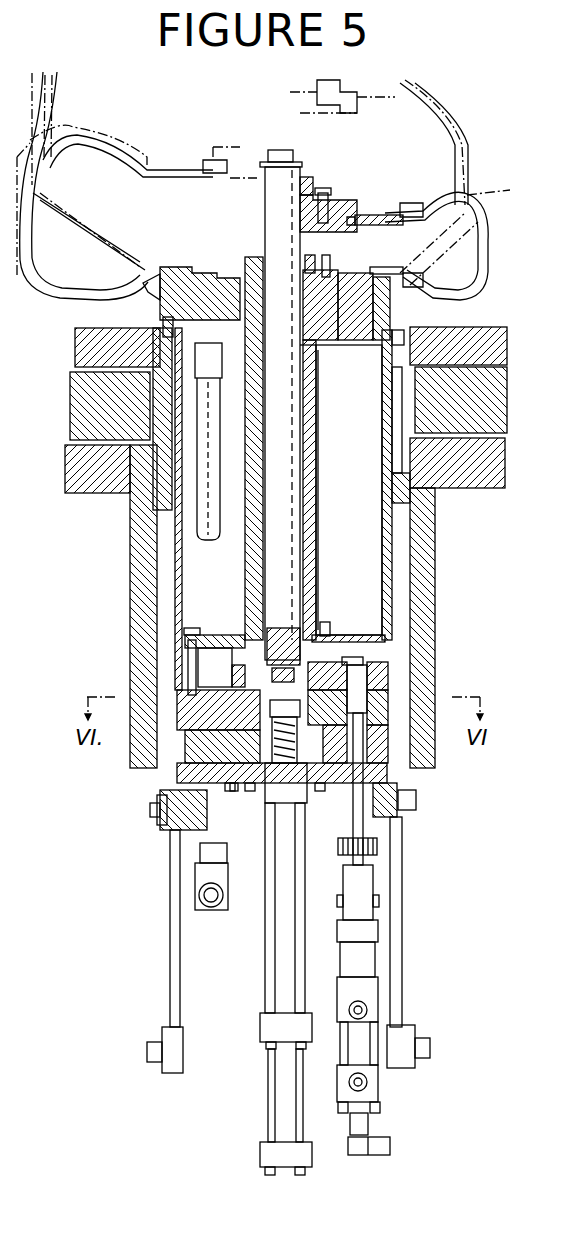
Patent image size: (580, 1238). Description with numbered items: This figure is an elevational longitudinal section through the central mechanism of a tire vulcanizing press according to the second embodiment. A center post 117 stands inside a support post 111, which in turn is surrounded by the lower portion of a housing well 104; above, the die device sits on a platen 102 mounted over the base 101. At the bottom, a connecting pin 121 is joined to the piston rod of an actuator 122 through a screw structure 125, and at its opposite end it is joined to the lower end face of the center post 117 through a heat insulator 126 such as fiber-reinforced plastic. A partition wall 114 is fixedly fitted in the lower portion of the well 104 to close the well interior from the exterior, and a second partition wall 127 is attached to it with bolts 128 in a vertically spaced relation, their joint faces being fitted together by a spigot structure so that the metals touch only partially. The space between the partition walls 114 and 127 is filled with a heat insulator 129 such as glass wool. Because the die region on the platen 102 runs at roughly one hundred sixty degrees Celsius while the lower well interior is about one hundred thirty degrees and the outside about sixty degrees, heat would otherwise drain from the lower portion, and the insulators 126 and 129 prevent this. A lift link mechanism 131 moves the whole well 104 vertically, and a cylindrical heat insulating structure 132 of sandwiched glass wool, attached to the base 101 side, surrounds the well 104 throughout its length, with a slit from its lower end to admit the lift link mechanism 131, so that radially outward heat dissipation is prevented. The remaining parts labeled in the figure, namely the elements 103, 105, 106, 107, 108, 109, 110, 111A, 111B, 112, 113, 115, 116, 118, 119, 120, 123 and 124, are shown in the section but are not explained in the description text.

The base 101 is at (485, 407).
The platen 102 is at (487, 345).
The lower plate 103 is at (433, 497).
The housing well 104 is at (390, 570).
The sleeve 105 is at (400, 328).
The retaining ring 106 is at (433, 533).
The clip 107 is at (470, 198).
The spring plate 108 is at (372, 215).
The flange block 109 is at (357, 272).
The chamber 110 is at (349, 490).
The support post 111 is at (308, 541).
The cylinder bore 111A is at (317, 490).
The cylinder step 111B is at (233, 663).
The actuator rod 112 is at (336, 658).
The plate 113 is at (322, 633).
The partition wall 114 is at (383, 700).
The frame 115 is at (183, 657).
The bolt 116 is at (183, 675).
The center post 117 is at (301, 437).
The upper block 118 is at (342, 198).
The bushing 119 is at (250, 285).
The seal ring 120 is at (308, 256).
The connecting pin 121 is at (280, 628).
The actuator 122 is at (278, 952).
The passage 123 is at (288, 372).
The tube 124 is at (208, 541).
The screw structure 125 is at (290, 733).
The heat insulator 126 is at (270, 690).
The partition wall 127 is at (178, 793).
The bolts 128 is at (233, 791).
The heat insulator 129 is at (180, 770).
The lift link mechanism 131 is at (172, 950).
The cylindrical heat insulating structure 132 is at (141, 570).